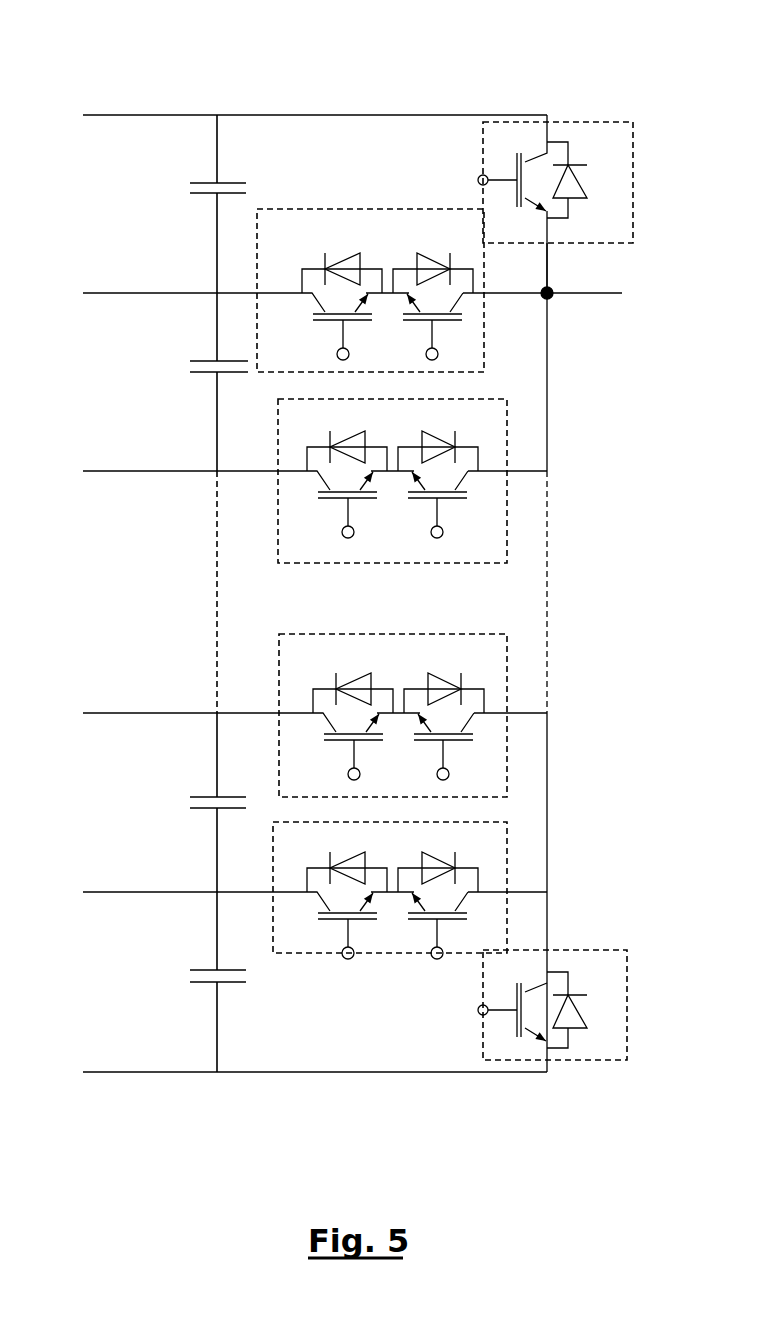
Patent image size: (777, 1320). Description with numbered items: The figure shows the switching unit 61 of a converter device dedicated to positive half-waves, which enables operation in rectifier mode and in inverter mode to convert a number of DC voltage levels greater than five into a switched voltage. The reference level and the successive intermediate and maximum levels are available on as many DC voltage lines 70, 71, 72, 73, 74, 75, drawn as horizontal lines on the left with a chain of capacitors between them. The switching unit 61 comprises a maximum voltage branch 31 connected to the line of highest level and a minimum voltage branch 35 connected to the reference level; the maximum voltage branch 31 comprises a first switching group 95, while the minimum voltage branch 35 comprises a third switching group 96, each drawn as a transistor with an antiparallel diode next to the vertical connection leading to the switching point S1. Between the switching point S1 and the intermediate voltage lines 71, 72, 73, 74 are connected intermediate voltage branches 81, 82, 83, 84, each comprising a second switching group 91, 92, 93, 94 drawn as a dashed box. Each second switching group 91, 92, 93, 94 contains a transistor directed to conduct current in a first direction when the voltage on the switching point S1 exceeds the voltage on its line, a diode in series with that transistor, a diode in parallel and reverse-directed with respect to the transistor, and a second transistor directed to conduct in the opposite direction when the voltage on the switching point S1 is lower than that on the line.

The switching unit 61 is at (505, 61).
The DC voltage line 75 is at (155, 117).
The DC voltage line 74 is at (133, 294).
The DC voltage line 73 is at (118, 473).
The DC voltage line 72 is at (125, 714).
The DC voltage line 71 is at (130, 892).
The DC voltage line 70 is at (115, 1073).
The minimum voltage branch 35 is at (388, 1073).
The second switching group 94 is at (340, 209).
The second switching group 93 is at (508, 530).
The second switching group 92 is at (507, 740).
The second switching group 91 is at (505, 822).
The first switching group 95 is at (585, 120).
The third switching group 96 is at (572, 1062).
The intermediate voltage branch 84 is at (500, 295).
The intermediate voltage branch 83 is at (528, 472).
The intermediate voltage branch 82 is at (547, 712).
The intermediate voltage branch 81 is at (527, 893).
The maximum voltage branch 31 is at (547, 263).
The switching point S1 is at (552, 297).